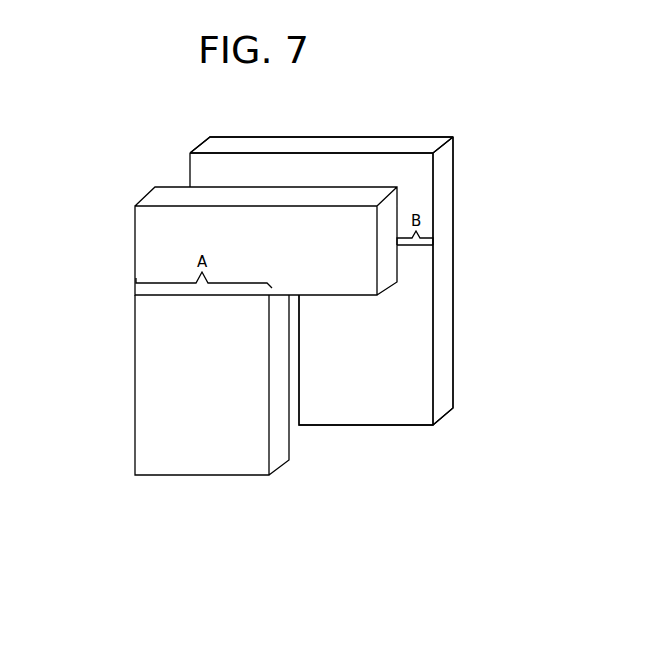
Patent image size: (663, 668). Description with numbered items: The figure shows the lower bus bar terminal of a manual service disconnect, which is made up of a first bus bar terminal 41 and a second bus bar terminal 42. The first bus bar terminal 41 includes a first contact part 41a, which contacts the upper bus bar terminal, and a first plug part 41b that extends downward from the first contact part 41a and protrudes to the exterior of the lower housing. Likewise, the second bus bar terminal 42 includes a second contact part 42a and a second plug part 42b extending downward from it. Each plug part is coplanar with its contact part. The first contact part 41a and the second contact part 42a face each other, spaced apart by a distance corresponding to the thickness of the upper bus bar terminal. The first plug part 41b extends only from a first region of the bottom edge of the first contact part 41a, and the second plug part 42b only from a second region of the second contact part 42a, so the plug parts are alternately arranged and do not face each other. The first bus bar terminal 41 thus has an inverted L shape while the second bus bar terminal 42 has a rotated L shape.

The first bus bar terminal 41 is at (228, 316).
The first contact part 41a is at (140, 233).
The first plug part 41b is at (142, 387).
The second bus bar terminal 42 is at (345, 260).
The second contact part 42a is at (415, 172).
The second plug part 42b is at (415, 352).